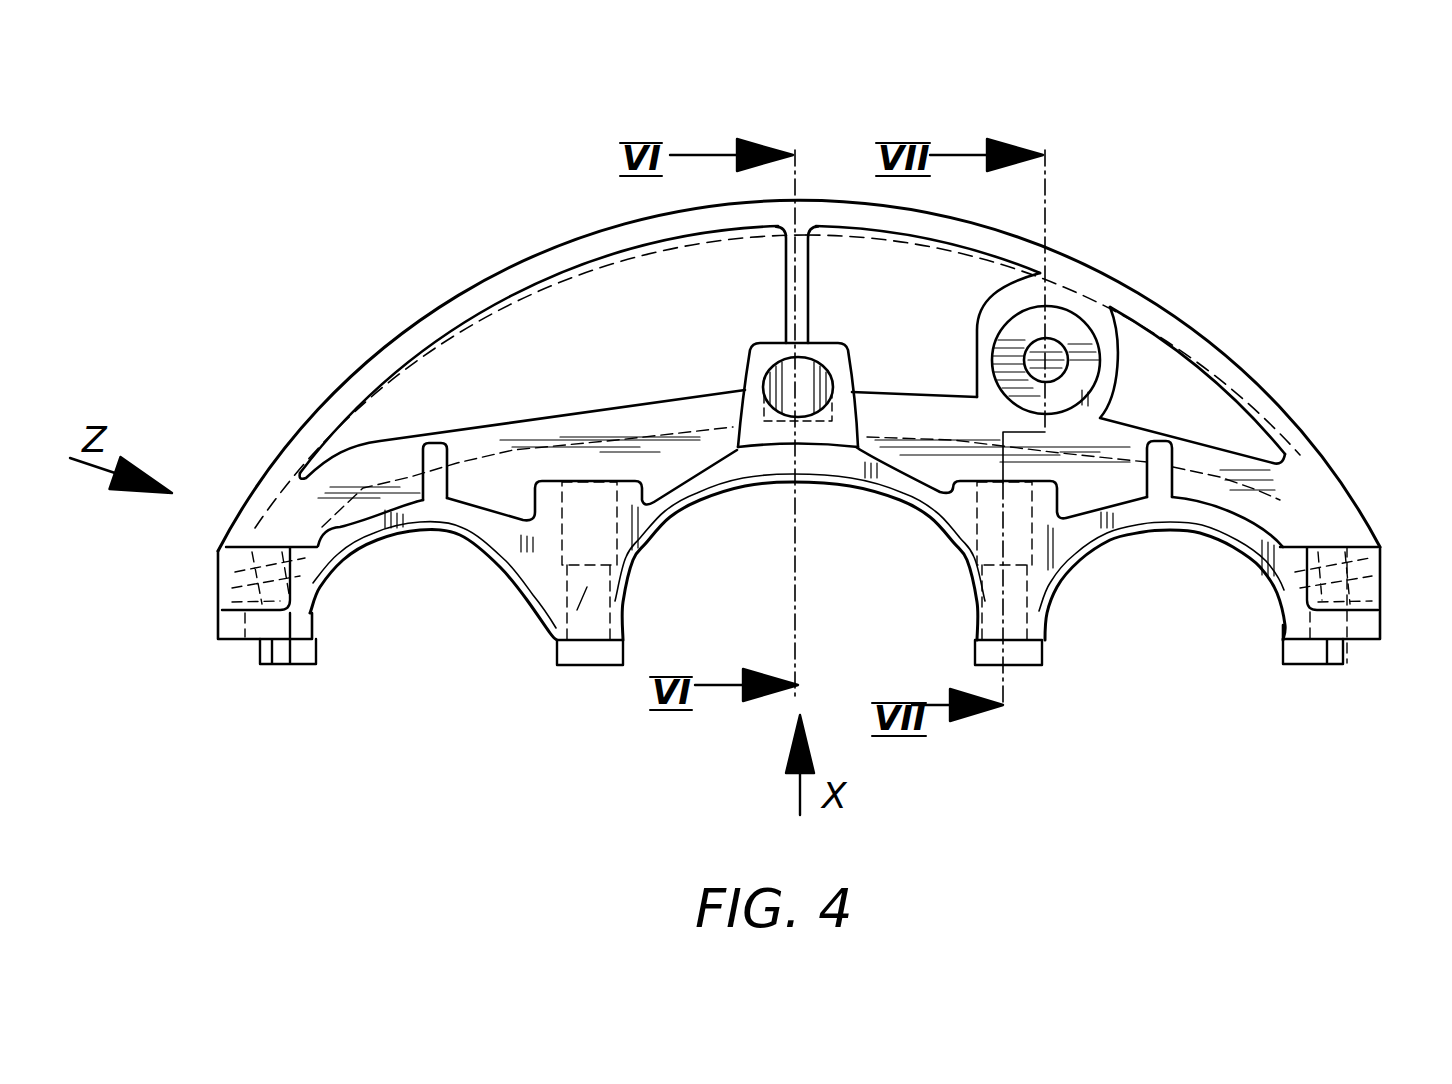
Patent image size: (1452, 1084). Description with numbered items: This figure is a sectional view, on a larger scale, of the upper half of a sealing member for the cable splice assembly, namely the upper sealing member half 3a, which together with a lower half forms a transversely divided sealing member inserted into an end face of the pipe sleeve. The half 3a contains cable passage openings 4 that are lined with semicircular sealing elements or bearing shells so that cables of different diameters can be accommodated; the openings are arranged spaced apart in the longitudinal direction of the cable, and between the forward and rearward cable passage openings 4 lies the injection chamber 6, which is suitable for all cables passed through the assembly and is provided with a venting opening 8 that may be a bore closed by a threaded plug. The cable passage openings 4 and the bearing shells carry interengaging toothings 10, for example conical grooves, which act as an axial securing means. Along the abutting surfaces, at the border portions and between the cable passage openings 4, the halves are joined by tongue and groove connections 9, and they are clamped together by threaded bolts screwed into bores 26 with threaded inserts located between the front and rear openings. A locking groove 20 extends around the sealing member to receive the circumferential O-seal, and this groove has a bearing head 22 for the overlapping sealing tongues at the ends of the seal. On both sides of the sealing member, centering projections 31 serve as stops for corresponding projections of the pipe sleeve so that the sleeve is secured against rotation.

The upper sealing member half 3a is at (1177, 313).
The cable passage opening 4 is at (385, 545).
The injection chamber 6 is at (1300, 450).
The venting opening 8 is at (768, 378).
The tongue and groove connection 9 is at (280, 657).
The interengaging toothing 10 is at (440, 533).
The locking groove 20 is at (363, 383).
The bearing head 22 is at (260, 510).
The bore 26 is at (573, 665).
The centering projection 31 is at (1297, 533).